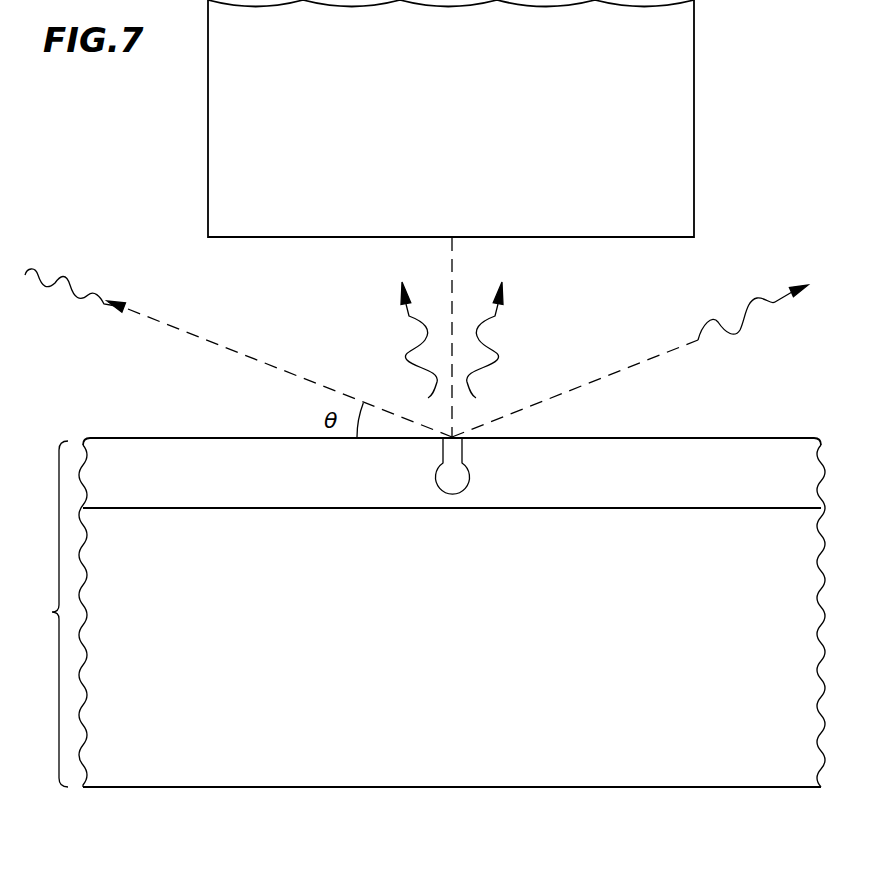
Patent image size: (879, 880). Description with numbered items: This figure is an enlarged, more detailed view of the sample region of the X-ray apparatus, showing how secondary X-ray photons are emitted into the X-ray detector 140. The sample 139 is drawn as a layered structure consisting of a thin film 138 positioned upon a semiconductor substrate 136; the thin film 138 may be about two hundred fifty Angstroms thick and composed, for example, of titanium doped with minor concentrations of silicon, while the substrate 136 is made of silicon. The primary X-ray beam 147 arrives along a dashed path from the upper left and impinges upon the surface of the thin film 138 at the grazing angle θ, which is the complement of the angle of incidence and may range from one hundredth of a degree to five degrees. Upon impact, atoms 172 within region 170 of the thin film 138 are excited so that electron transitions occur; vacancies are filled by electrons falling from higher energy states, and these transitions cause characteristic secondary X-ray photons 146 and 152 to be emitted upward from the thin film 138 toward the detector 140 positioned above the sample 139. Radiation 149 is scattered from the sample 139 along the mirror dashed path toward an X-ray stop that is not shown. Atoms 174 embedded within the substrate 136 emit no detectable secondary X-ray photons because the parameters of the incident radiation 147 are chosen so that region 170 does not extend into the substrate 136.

The detector 140 is at (274, 48).
The primary X-ray beam 147 is at (62, 280).
The scattered radiation 149 is at (743, 333).
The secondary X-ray photons 152 is at (407, 360).
The secondary X-ray photons 146 is at (497, 360).
The atoms 172 is at (167, 458).
The thin film 138 is at (776, 484).
The region 170 is at (455, 470).
The atoms embedded within substrate 174 is at (188, 760).
The semiconductor substrate 136 is at (780, 769).
The sample 139 is at (52, 612).